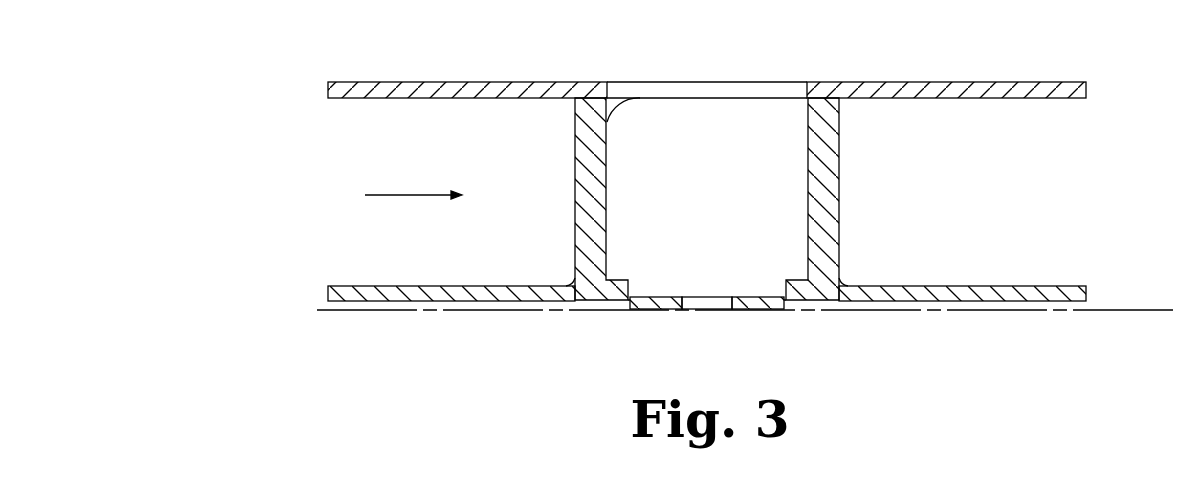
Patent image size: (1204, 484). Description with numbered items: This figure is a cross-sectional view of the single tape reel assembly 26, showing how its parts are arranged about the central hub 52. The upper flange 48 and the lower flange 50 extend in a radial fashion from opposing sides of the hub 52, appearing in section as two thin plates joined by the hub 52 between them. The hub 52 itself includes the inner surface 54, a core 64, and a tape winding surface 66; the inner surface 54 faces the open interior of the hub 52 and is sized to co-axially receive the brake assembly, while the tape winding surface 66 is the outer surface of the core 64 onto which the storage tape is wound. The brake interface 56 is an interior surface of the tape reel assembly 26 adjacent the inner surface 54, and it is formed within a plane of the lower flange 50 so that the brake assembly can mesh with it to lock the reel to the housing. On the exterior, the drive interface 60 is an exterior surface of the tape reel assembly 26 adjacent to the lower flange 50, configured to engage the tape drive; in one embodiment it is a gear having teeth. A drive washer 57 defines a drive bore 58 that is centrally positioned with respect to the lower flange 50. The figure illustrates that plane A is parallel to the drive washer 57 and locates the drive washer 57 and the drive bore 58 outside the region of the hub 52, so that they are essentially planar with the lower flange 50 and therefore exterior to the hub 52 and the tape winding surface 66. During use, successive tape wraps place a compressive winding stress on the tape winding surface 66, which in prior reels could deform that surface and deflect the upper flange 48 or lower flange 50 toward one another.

The tape reel assembly 26 is at (300, 73).
The upper flange 48 is at (1086, 88).
The lower flange 50 is at (1086, 294).
The hub 52 is at (395, 196).
The inner surface 54 is at (648, 82).
The brake interface 56 is at (620, 272).
The drive washer 57 is at (653, 312).
The drive bore 58 is at (710, 311).
The drive interface 60 is at (609, 315).
The core 64 is at (575, 197).
The tape winding surface 66 is at (575, 260).
The plane A is at (757, 312).